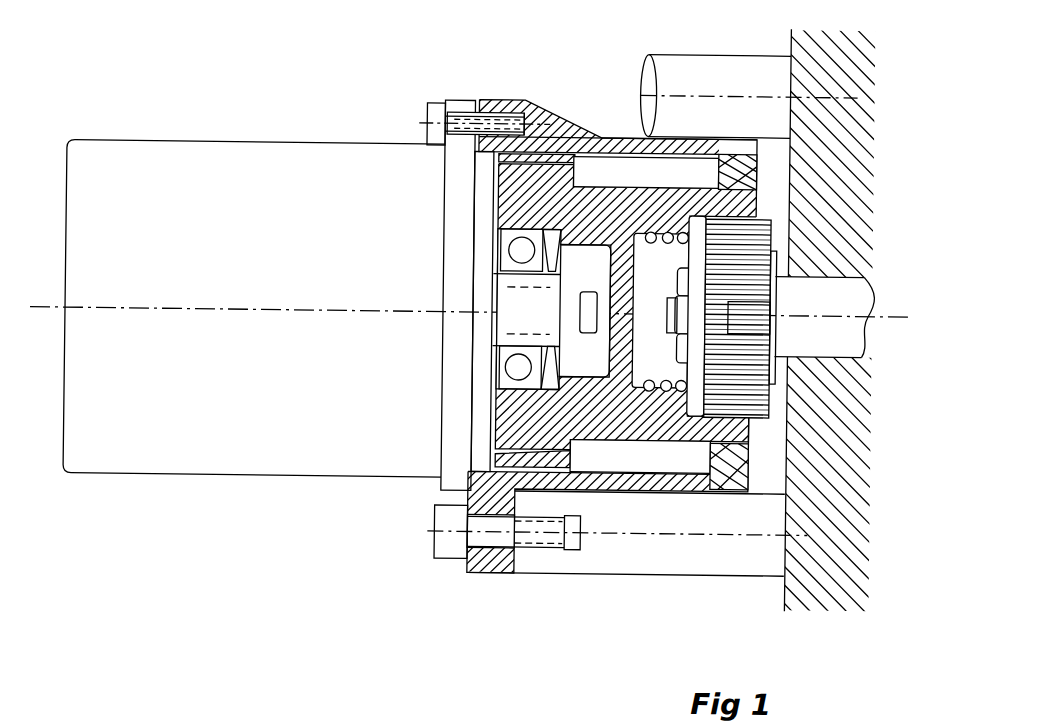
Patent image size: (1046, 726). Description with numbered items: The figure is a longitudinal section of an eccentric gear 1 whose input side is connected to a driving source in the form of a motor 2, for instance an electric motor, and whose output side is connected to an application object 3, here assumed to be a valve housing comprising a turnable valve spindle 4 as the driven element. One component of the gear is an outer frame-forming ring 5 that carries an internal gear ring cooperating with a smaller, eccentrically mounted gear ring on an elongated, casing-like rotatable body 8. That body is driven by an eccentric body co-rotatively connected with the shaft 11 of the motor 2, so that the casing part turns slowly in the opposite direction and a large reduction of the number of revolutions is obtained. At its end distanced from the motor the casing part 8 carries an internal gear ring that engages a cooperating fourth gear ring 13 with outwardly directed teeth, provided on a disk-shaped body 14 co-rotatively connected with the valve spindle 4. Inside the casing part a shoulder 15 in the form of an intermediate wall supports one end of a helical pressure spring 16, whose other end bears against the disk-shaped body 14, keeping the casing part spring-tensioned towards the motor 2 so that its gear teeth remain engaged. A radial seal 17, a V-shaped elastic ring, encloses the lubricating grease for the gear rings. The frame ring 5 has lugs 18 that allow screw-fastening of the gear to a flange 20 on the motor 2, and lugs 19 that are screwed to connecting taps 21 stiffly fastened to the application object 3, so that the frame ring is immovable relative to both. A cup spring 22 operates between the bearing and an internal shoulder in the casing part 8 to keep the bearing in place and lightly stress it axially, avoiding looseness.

The eccentric gear 1 is at (587, 101).
The motor 2 is at (265, 152).
The application object 3 is at (807, 44).
The valve spindle 4 is at (858, 287).
The outer frame-forming ring 5 is at (610, 140).
The rotatable body 8 is at (639, 205).
The shaft 11 is at (586, 300).
The fourth gear ring 13 is at (750, 386).
The disk-shaped body 14 is at (772, 235).
The shoulder 15 is at (630, 281).
The pressure spring 16 is at (647, 380).
The radial seal 17 is at (758, 160).
The lugs 18 is at (497, 101).
The lugs 19 is at (488, 574).
The flange 20 is at (449, 225).
The connecting taps 21 is at (688, 60).
The cup spring 22 is at (557, 363).